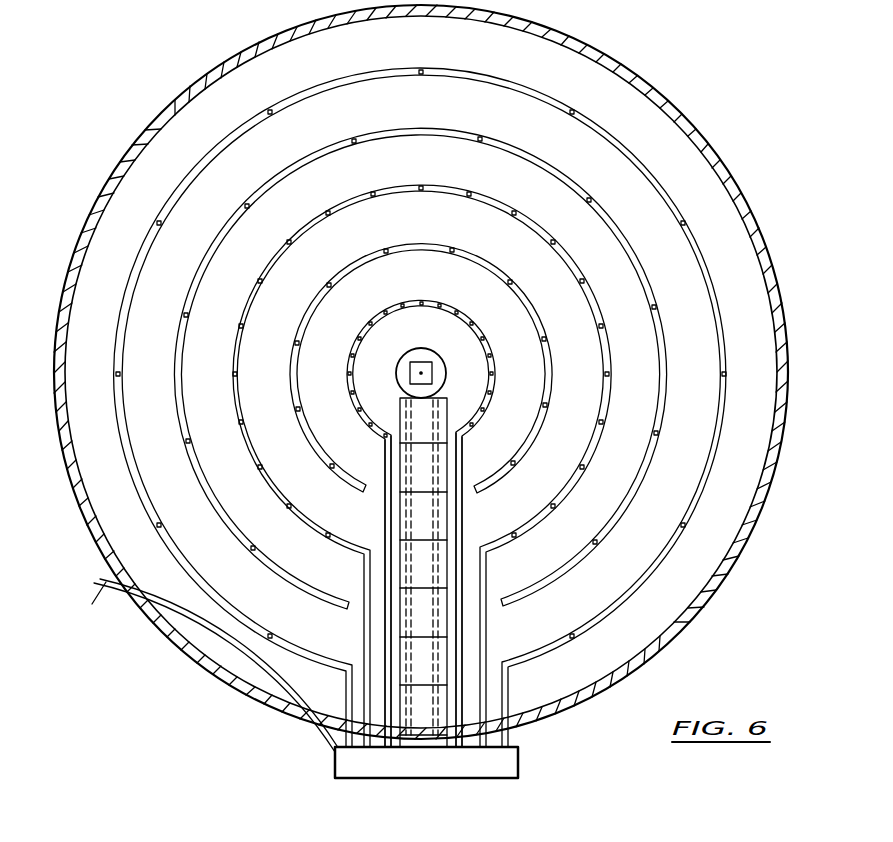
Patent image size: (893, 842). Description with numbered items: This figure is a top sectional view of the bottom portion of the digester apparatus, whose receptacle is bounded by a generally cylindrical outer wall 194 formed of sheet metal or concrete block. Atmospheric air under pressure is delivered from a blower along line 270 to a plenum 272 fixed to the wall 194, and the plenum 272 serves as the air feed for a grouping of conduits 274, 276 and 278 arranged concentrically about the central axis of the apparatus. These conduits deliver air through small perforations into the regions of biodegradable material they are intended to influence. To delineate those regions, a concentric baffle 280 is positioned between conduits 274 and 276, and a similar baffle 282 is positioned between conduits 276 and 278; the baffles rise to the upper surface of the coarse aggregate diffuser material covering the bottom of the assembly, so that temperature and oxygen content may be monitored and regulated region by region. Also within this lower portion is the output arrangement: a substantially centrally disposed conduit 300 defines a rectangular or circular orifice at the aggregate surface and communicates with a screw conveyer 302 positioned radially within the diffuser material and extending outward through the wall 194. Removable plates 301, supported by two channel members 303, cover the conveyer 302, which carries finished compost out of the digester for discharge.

The outer wall 194 is at (615, 62).
The conduit 274 is at (180, 185).
The baffle 280 is at (575, 178).
The conduit 276 is at (265, 268).
The baffle 282 is at (532, 300).
The conduit 278 is at (360, 329).
The conduit 300 is at (431, 356).
The removable plates 301 is at (449, 461).
The screw conveyer 302 is at (433, 572).
The channel members 303 is at (403, 511).
The line 270 is at (228, 725).
The plenum 272 is at (505, 762).